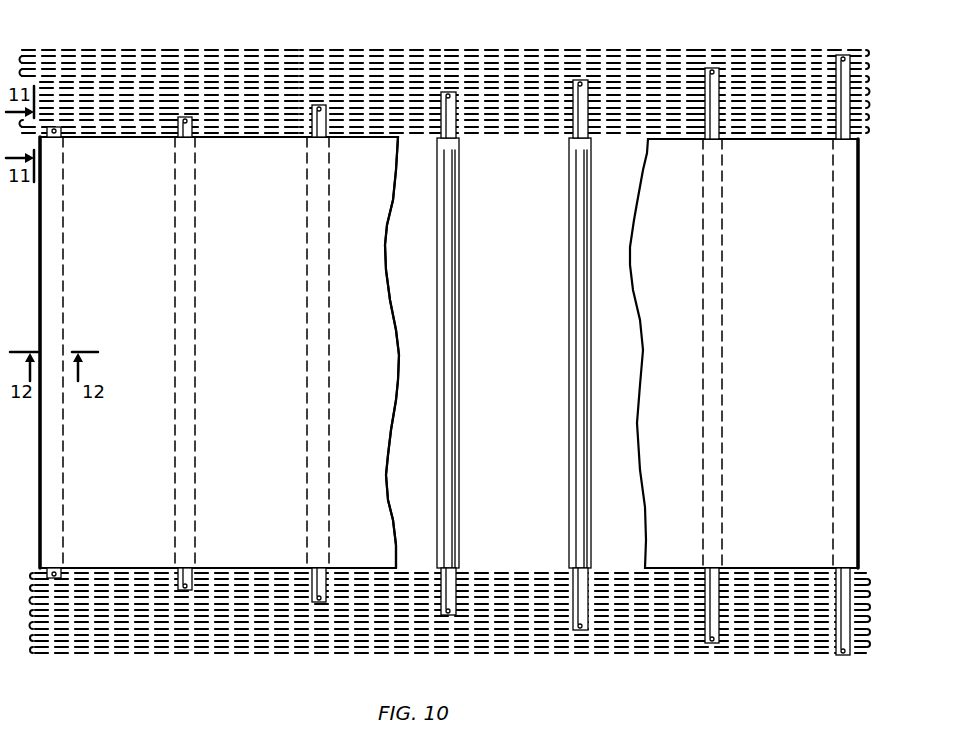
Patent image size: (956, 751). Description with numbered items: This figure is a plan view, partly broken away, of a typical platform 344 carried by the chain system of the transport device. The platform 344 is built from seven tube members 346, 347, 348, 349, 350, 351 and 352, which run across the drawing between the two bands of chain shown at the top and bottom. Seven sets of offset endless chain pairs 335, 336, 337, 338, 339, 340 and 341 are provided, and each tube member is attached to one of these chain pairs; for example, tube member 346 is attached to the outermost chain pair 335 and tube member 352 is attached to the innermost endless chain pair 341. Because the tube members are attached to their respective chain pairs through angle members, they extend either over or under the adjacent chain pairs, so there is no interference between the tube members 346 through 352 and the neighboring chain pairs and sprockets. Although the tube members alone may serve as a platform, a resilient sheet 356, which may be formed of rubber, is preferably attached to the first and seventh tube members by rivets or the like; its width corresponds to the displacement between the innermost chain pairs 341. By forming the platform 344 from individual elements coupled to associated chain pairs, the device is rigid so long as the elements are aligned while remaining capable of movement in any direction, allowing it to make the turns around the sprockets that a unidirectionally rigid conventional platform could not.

The outermost endless chain pair 335 is at (868, 53).
The endless chain pair 336 is at (762, 68).
The endless chain pair 337 is at (648, 80).
The endless chain pair 338 is at (537, 93).
The endless chain pair 339 is at (403, 107).
The endless chain pair 340 is at (283, 118).
The innermost endless chain pair 341 is at (93, 128).
The platform 344 is at (357, 288).
The tube member 346 is at (842, 638).
The tube member 347 is at (710, 633).
The tube member 348 is at (587, 583).
The tube member 349 is at (453, 583).
The tube member 350 is at (325, 580).
The tube member 351 is at (193, 580).
The tube member 352 is at (53, 580).
The resilient sheet 356 is at (373, 462).